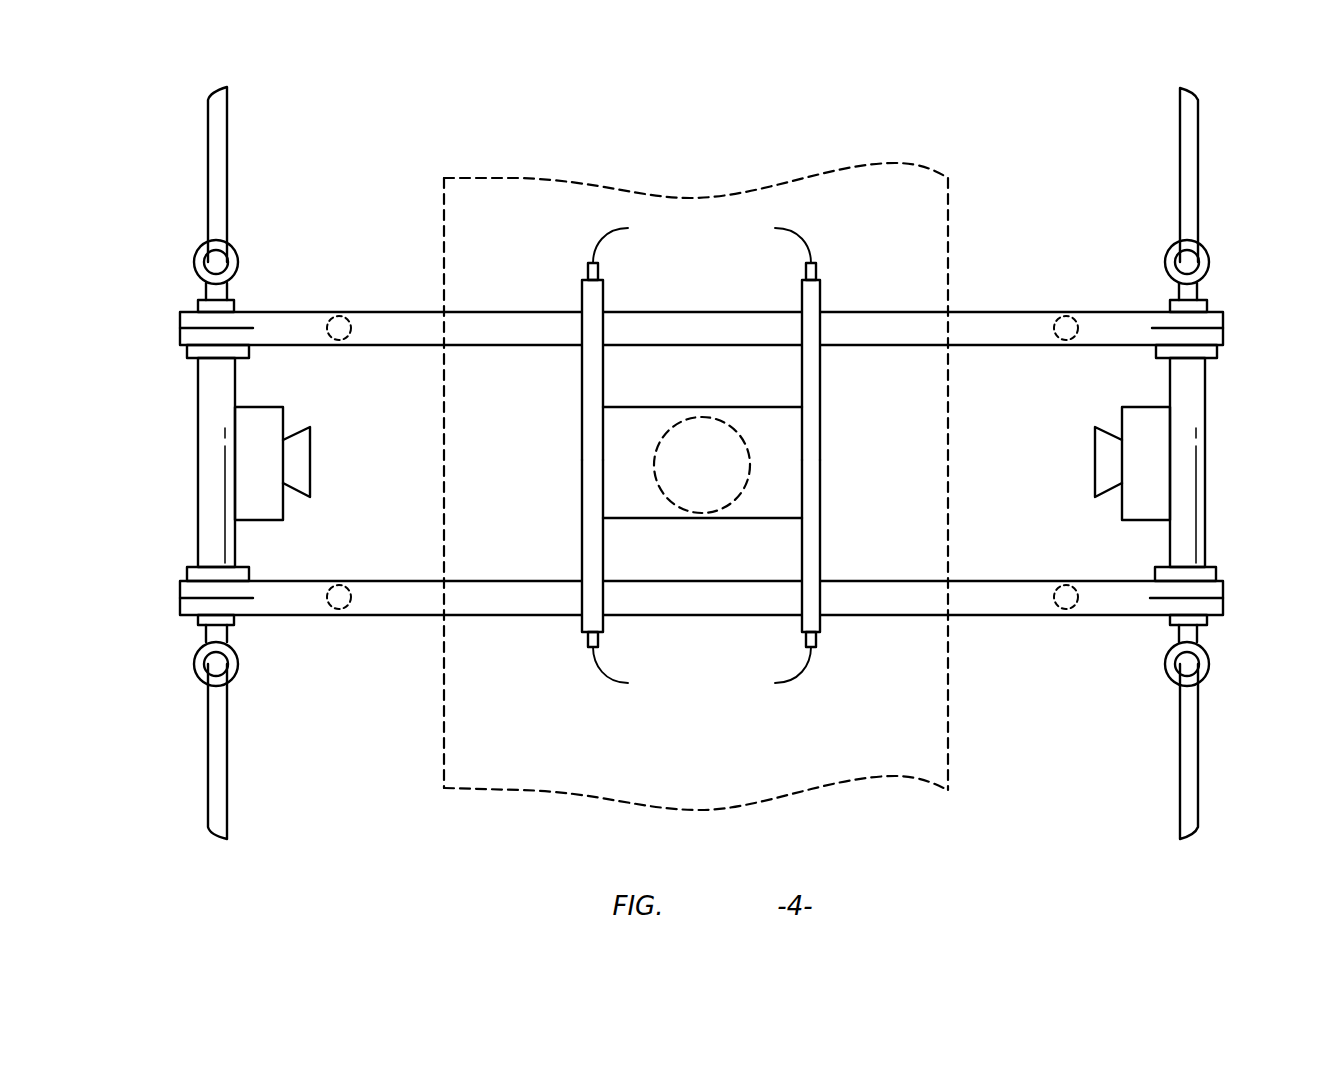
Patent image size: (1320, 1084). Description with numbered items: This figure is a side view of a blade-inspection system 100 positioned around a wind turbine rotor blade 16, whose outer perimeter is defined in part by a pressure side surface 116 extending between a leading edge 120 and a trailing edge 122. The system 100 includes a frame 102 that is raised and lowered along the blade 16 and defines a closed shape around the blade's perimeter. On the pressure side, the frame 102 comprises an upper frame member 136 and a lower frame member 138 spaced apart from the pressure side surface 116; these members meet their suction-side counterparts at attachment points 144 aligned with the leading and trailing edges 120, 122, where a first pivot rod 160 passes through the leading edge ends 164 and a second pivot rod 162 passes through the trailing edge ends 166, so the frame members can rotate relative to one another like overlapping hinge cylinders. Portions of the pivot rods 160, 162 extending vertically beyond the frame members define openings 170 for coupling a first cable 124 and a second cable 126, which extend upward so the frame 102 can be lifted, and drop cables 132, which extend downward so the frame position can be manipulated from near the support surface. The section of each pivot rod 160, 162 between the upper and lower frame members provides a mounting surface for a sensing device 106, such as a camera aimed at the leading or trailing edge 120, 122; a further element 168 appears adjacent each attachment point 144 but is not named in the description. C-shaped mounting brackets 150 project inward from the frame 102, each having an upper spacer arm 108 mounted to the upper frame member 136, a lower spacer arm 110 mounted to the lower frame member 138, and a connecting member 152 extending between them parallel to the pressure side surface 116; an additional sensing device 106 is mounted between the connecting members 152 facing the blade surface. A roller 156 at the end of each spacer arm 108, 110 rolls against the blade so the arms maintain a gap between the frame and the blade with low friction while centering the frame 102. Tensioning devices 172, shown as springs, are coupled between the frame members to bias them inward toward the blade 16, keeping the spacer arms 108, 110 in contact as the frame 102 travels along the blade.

The rotor blade 16 is at (525, 172).
The system 100 is at (1040, 182).
The frame 102 is at (985, 302).
The sensing device 106 is at (680, 478).
The upper spacer arm 108 is at (582, 295).
The lower spacer arm 110 is at (582, 620).
The pressure side surface 116 is at (492, 738).
The leading edge 120 is at (443, 212).
The trailing edge 122 is at (950, 723).
The first cable 124 is at (208, 172).
The second cable 126 is at (1198, 172).
The drop cable 132 is at (208, 743).
The upper frame member 136 is at (392, 328).
The lower frame member 138 is at (392, 600).
The attachment point 144 is at (198, 312).
The mounting bracket 150 is at (582, 388).
The connecting member 152 is at (593, 495).
The roller 156 is at (702, 455).
The first pivot rod 160 is at (210, 517).
The second pivot rod 162 is at (1194, 517).
The leading edge end 164 is at (297, 323).
The trailing edge end 166 is at (1123, 327).
The spacer block 168 is at (189, 357).
The opening 170 is at (195, 265).
The tensioning device 172 is at (327, 333).